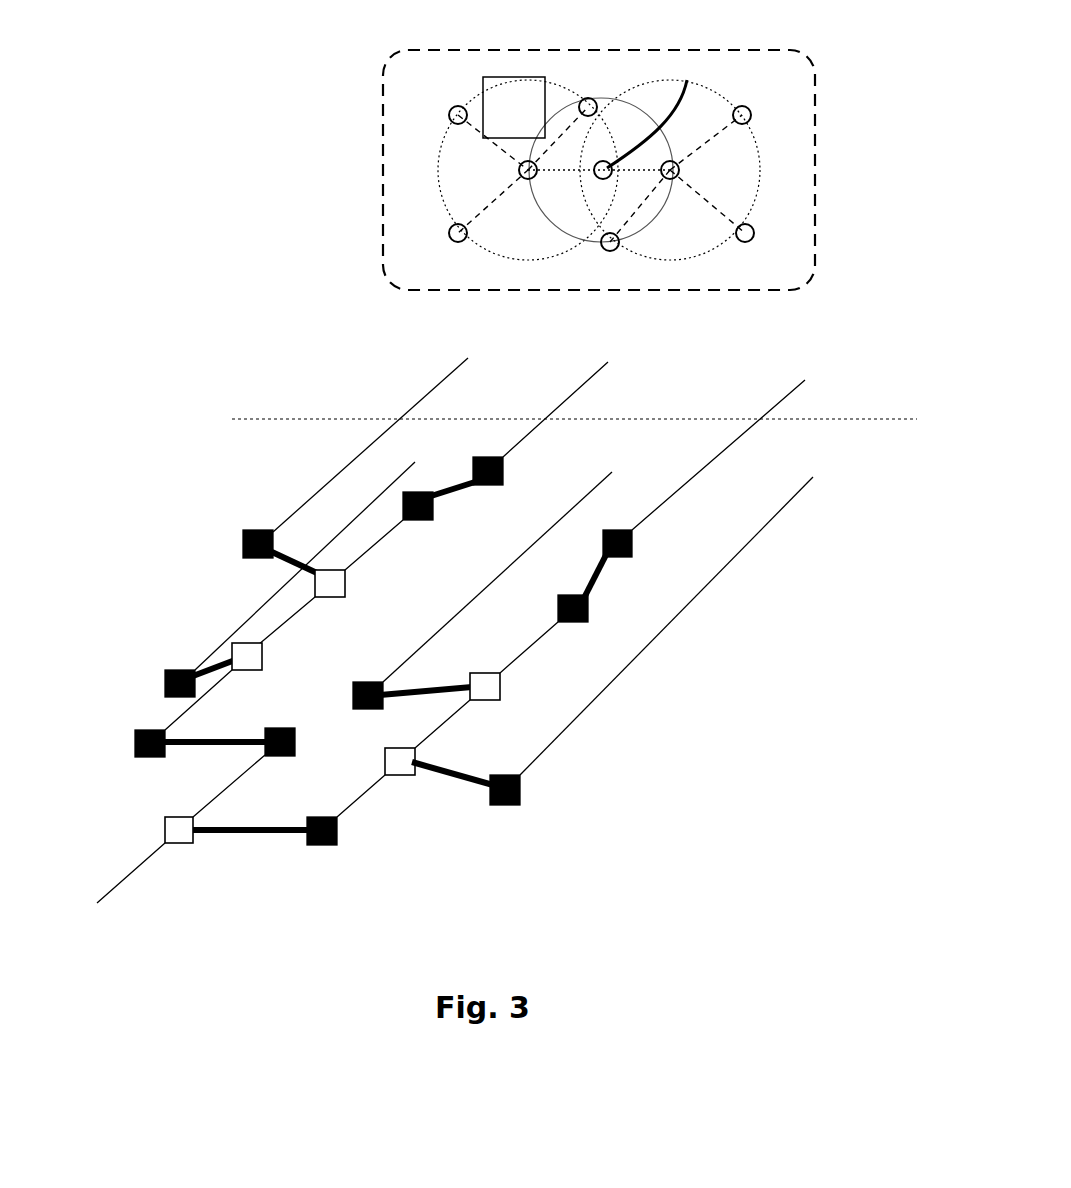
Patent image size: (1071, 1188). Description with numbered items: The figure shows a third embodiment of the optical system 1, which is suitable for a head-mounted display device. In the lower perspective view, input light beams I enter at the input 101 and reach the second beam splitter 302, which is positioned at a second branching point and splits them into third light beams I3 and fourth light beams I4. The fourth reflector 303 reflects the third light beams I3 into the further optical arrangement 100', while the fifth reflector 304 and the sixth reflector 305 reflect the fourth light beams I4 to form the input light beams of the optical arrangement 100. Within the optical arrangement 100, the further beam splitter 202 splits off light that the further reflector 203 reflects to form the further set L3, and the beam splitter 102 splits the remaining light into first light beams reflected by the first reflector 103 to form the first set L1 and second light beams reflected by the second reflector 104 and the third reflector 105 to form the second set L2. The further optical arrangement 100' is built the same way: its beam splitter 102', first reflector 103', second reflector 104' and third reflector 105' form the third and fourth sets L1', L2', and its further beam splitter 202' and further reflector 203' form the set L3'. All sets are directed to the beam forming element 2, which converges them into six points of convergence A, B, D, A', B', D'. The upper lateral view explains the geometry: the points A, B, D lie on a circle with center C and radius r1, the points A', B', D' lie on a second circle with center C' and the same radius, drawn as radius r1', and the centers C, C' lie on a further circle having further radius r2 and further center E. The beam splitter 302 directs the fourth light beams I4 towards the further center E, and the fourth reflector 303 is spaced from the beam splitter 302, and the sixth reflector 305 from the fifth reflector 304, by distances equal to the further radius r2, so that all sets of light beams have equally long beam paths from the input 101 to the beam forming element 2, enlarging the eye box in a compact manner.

The optical system 1 is at (73, 362).
The beam forming element 2 is at (260, 419).
The optical arrangement 100 is at (140, 390).
The further optical arrangement 100' is at (782, 713).
The input 101 is at (97, 903).
The beam splitter 102 is at (344, 591).
The first reflector 103 is at (221, 519).
The second reflector 104 is at (439, 527).
The third reflector 105 is at (502, 496).
The further beam splitter 202 is at (260, 672).
The further reflector 203 is at (155, 673).
The second beam splitter 302 is at (178, 843).
The fourth reflector 303 is at (313, 845).
The fifth reflector 304 is at (277, 756).
The sixth reflector 305 is at (135, 747).
The beam splitter 102' is at (470, 703).
The first reflector 103' is at (432, 670).
The second reflector 104' is at (587, 614).
The third reflector 105' is at (638, 566).
The further beam splitter 202' is at (372, 748).
The further reflector 203' is at (510, 797).
The first set of light beams L1 is at (370, 432).
The second set of light beams L2 is at (386, 531).
The further set of light beams L3 is at (290, 566).
The third set of light beams L1' is at (497, 577).
The fourth set of light beams L2' is at (571, 575).
The further set of light beams L3' is at (666, 626).
The input light beams I is at (130, 877).
The third light beams I3 is at (270, 833).
The fourth light beams I4 is at (210, 803).
The point of convergence A is at (435, 220).
The point of convergence B is at (606, 220).
The center C is at (487, 170).
The further point of convergence D is at (427, 346).
The further center E is at (599, 170).
The point of convergence A' is at (632, 369).
The point of convergence B' is at (797, 255).
The center C' is at (705, 171).
The point of convergence D' is at (803, 341).
The radius r1 is at (514, 109).
The further radius r2 is at (563, 173).
The radius r1' is at (703, 129).